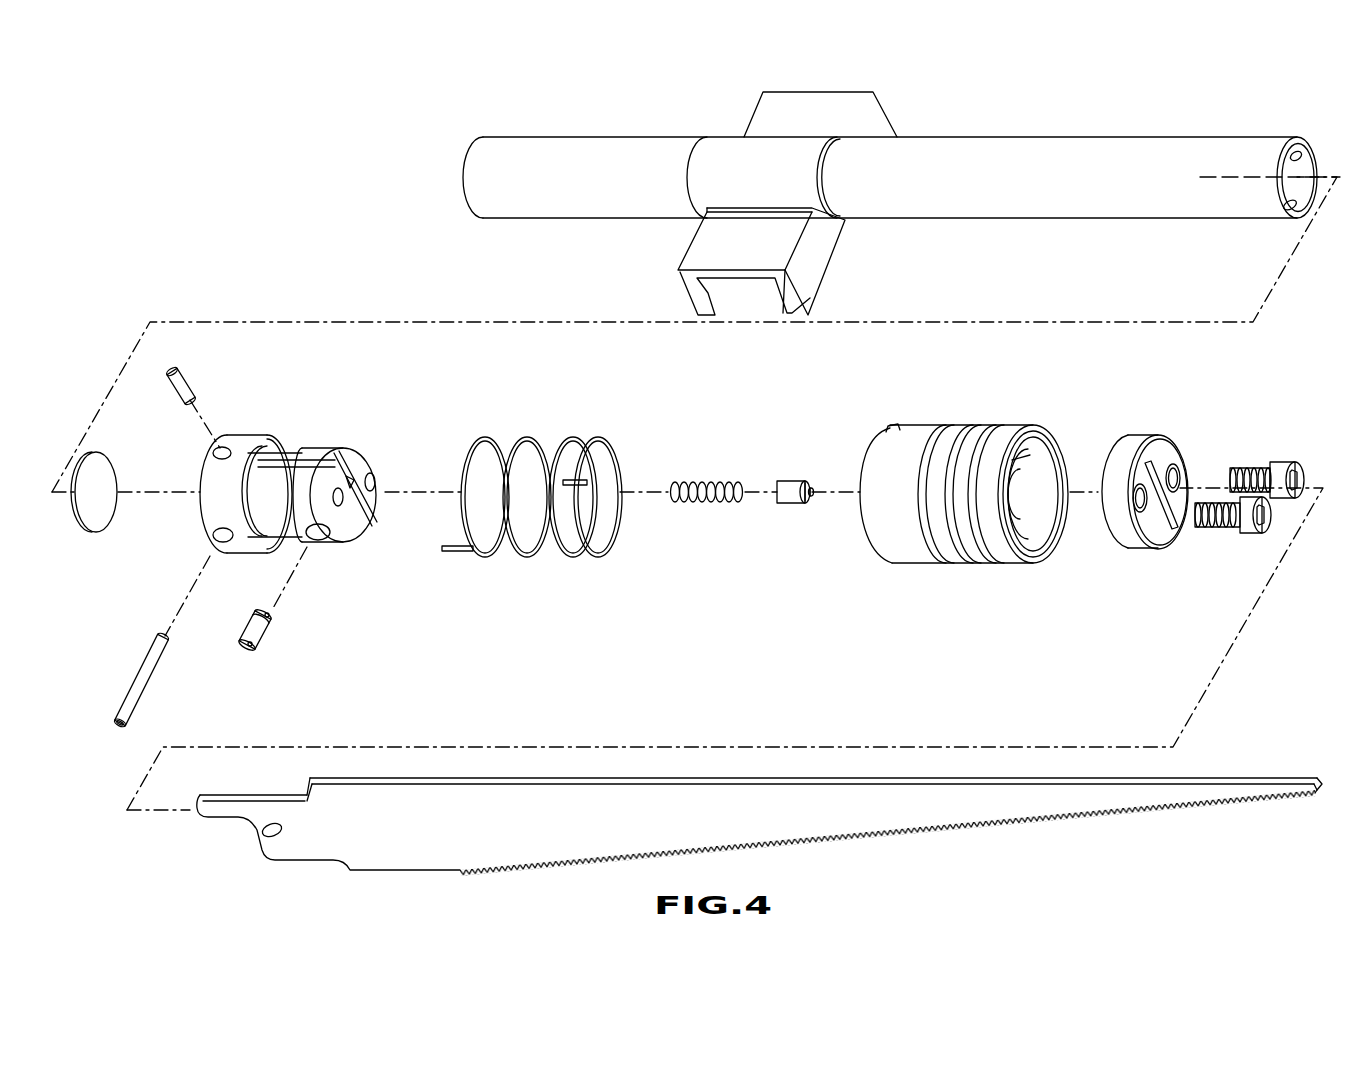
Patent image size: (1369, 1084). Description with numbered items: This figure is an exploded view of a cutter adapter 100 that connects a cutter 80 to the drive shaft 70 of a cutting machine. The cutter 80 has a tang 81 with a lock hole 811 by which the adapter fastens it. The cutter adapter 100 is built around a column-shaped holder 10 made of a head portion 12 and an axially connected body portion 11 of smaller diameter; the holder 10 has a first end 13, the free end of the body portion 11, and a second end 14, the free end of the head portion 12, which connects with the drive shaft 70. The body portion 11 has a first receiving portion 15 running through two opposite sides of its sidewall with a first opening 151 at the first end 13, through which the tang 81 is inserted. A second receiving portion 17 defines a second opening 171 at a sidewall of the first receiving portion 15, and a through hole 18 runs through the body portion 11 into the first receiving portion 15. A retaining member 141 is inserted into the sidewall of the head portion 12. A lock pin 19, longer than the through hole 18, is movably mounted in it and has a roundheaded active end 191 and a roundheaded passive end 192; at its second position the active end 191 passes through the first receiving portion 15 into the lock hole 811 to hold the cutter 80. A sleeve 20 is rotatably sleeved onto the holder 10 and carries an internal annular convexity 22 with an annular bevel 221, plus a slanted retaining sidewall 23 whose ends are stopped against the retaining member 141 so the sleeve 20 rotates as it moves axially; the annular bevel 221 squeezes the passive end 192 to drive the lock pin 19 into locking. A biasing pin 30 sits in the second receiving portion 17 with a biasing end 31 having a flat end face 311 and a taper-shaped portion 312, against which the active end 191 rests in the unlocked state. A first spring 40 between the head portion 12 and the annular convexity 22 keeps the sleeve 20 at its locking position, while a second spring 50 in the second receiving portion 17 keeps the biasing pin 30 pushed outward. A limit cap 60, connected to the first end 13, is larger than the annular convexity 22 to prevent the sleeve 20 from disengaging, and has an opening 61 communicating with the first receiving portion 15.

The cutter adapter 100 is at (1275, 406).
The holder 10 is at (268, 438).
The body portion 11 is at (290, 455).
The head portion 12 is at (220, 445).
The first end 13 is at (352, 455).
The second end 14 is at (200, 470).
The retaining member 141 is at (183, 390).
The first receiving portion 15 is at (343, 502).
The first opening 151 is at (356, 466).
The second receiving portion 17 is at (373, 490).
The second opening 171 is at (350, 478).
The through hole 18 is at (320, 540).
The lock pin 19 is at (250, 617).
The active end 191 is at (275, 615).
The passive end 192 is at (252, 645).
The sleeve 20 is at (968, 410).
The annular convexity 22 is at (1030, 520).
The annular bevel 221 is at (1030, 470).
The retaining sidewall 23 is at (885, 435).
The biasing pin 30 is at (790, 493).
The biasing end 31 is at (785, 604).
The flat end face 311 is at (812, 492).
The taper-shaped portion 312 is at (808, 500).
The first spring 40 is at (540, 437).
The second spring 50 is at (690, 503).
The limit cap 60 is at (1120, 540).
The opening 61 is at (1158, 550).
The drive shaft 70 is at (1003, 160).
The cutter 80 is at (1237, 778).
The tang 81 is at (290, 890).
The lock hole 811 is at (272, 830).